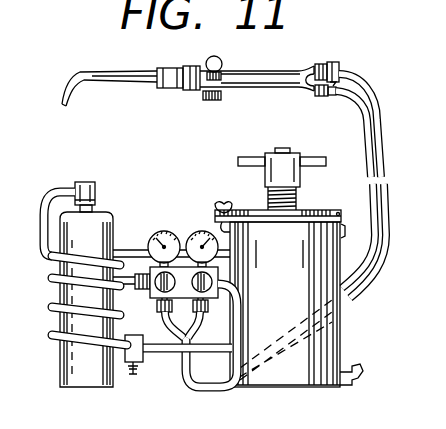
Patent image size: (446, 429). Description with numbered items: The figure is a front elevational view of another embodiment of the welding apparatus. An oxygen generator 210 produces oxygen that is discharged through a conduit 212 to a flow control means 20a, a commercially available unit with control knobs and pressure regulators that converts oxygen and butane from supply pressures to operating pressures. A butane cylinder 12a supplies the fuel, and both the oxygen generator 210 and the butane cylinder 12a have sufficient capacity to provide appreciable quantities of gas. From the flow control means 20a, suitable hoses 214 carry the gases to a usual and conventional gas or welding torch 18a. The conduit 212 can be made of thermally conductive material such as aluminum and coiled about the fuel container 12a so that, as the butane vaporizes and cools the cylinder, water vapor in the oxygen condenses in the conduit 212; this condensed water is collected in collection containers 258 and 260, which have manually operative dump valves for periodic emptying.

The welding torch 18a is at (78, 74).
The collection container 260 is at (338, 65).
The hoses 214 is at (370, 134).
The flow control means 20a is at (163, 231).
The conduit 212 is at (228, 255).
The oxygen generator 210 is at (341, 332).
The butane cylinder 12a is at (88, 382).
The collection container 258 is at (140, 358).